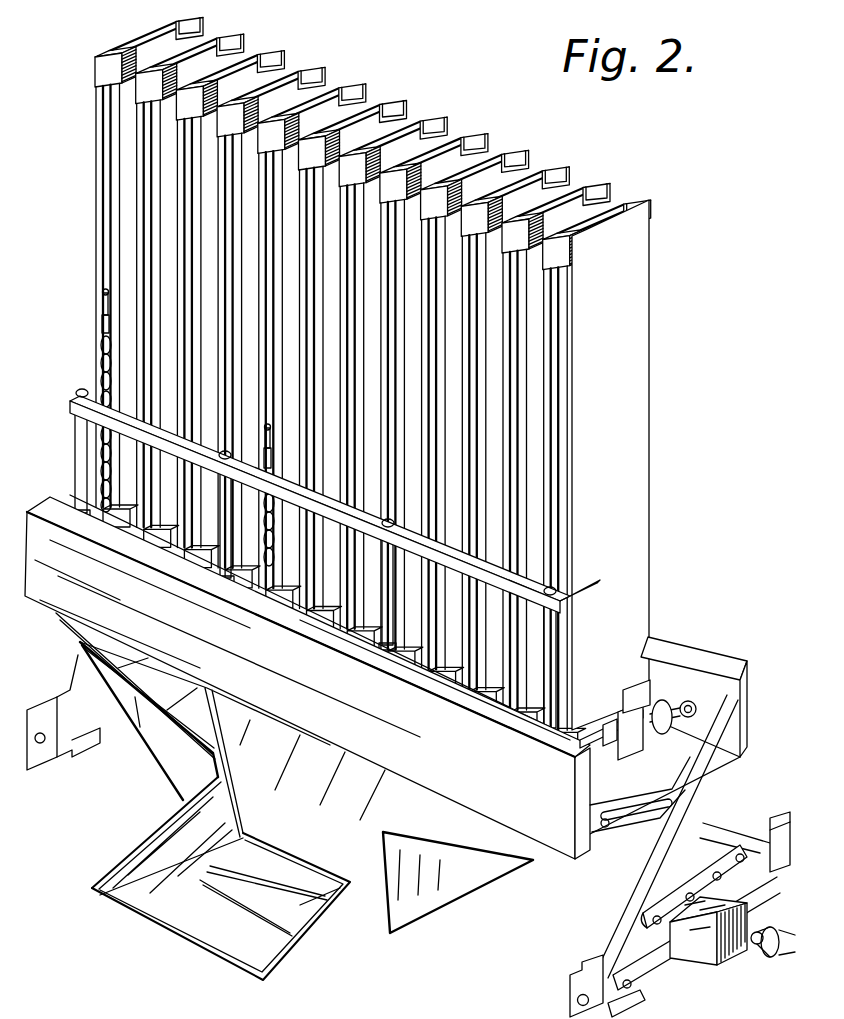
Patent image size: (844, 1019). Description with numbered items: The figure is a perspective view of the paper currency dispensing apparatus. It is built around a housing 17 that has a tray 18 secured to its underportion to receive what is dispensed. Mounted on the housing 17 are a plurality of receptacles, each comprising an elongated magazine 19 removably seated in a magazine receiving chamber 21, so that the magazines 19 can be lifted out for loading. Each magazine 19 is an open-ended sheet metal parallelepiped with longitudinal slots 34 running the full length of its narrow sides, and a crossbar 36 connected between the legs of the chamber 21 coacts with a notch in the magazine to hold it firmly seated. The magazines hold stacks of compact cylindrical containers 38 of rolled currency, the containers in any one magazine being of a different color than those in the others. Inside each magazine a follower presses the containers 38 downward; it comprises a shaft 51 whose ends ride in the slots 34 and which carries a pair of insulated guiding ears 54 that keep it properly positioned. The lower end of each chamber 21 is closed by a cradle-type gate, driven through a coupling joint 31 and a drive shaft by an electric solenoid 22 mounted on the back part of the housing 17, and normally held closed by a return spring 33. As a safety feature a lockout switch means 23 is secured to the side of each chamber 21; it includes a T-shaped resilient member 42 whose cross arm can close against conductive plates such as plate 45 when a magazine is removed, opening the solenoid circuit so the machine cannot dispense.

The housing 17 is at (753, 675).
The tray 18 is at (228, 950).
The magazine 19 is at (640, 388).
The magazine receiving chamber 21 is at (342, 626).
The electric solenoid 22 is at (667, 690).
The lockout switch means 23 is at (610, 710).
The coupling joint 31 is at (655, 740).
The return spring 33 is at (700, 690).
The longitudinal slots 34 is at (560, 352).
The crossbar 36 is at (568, 312).
The containers 38 is at (100, 365).
The T-shaped resilient member 42 is at (608, 727).
The conductive plate 45 is at (648, 704).
The shaft 51 is at (103, 325).
The insulated guiding ears 54 is at (101, 305).